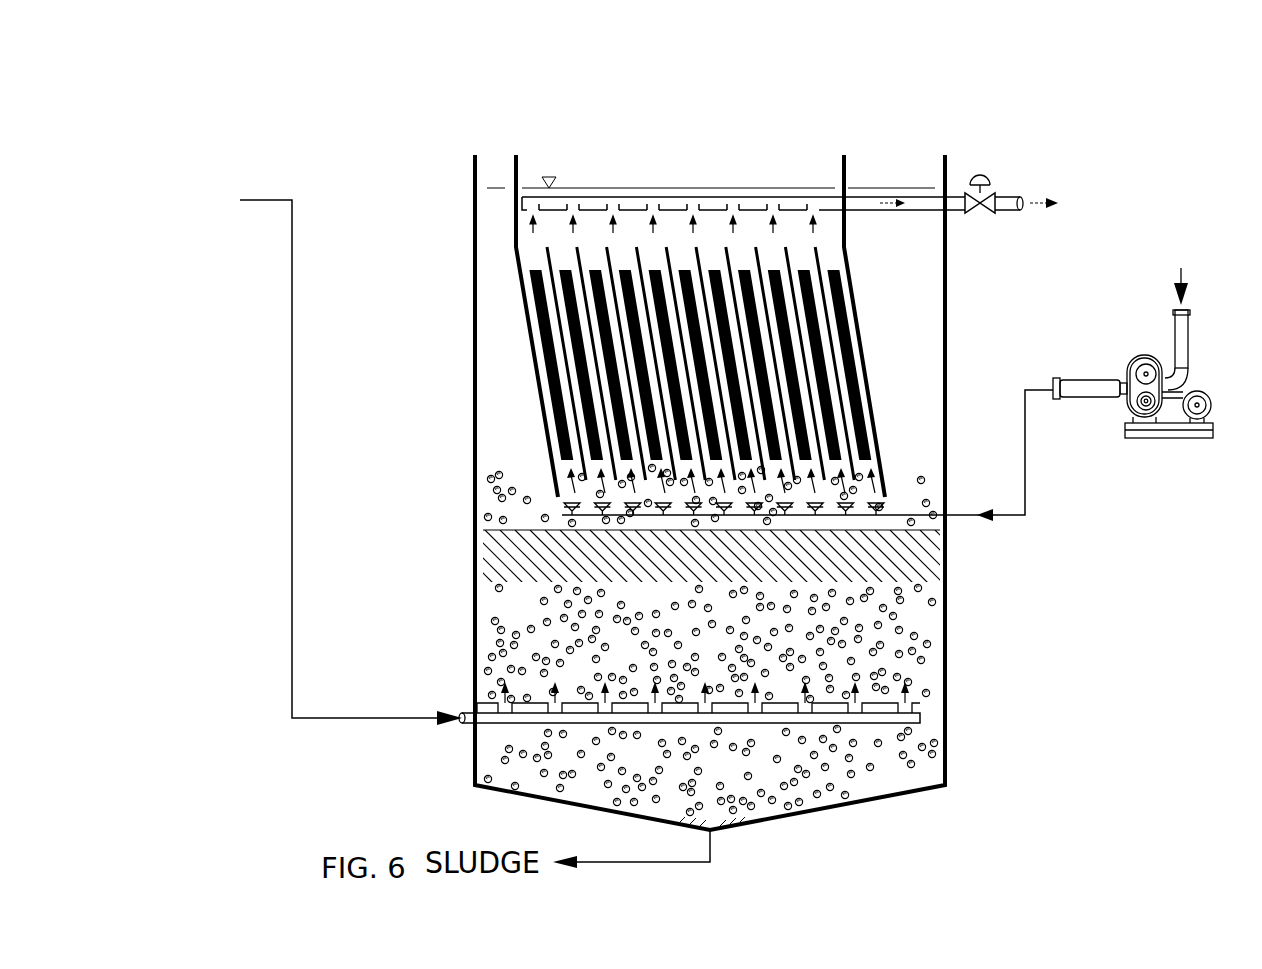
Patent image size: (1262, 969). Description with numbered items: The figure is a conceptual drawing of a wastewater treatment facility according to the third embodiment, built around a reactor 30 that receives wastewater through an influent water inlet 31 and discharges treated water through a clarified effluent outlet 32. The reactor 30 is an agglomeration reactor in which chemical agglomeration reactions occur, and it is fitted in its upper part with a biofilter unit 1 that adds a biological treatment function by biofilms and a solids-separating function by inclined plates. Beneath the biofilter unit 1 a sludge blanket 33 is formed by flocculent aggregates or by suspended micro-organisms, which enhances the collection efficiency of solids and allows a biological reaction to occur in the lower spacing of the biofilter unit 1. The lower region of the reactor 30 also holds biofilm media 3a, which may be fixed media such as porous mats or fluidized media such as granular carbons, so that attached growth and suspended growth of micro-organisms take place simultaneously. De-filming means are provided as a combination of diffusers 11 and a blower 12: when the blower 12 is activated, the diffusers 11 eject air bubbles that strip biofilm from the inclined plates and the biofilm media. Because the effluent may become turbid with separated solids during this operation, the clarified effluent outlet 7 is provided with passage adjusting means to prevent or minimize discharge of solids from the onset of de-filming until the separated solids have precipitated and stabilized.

The biofilter unit 1 is at (514, 170).
The clarified effluent outlet 7 is at (880, 202).
The clarified effluent outlet 32 is at (953, 197).
The sludge blanket 33 is at (500, 530).
The reactor 30 is at (948, 644).
The influent water inlet 31 is at (467, 719).
The biofilm media 3a is at (916, 765).
The diffusers 11 is at (875, 760).
The blower 12 is at (1145, 408).